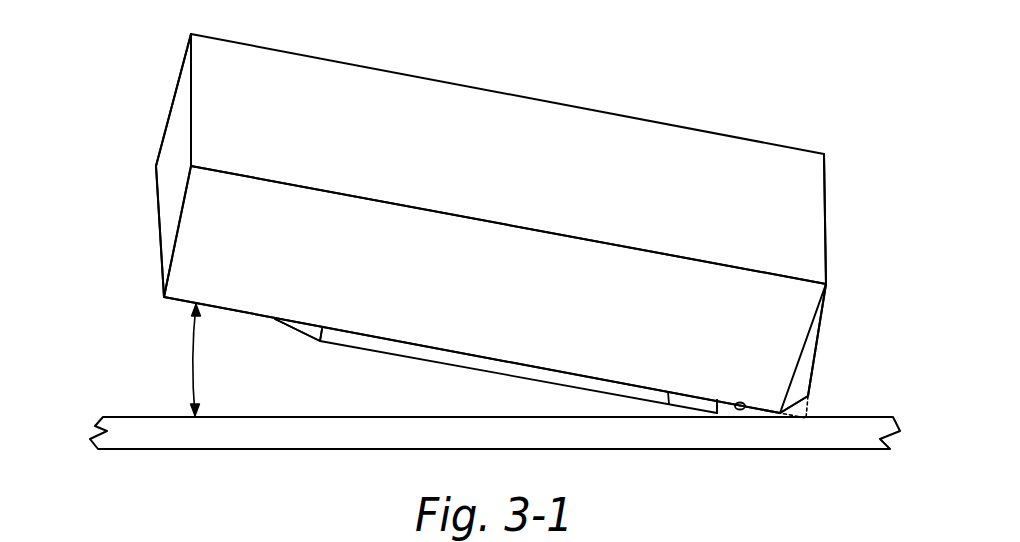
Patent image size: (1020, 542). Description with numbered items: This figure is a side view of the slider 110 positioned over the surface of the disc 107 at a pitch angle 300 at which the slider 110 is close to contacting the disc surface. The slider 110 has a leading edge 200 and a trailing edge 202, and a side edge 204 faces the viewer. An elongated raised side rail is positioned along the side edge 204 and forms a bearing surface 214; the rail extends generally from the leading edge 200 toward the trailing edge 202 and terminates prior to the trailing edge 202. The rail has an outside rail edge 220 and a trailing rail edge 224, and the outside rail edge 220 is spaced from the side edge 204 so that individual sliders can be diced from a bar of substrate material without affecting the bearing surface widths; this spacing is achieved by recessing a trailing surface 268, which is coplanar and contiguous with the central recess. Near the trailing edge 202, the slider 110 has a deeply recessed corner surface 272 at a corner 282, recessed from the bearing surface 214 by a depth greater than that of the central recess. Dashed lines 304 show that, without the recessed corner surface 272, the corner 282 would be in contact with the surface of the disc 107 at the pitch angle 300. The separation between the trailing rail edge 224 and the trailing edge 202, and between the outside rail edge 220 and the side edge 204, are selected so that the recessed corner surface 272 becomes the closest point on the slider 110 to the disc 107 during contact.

The slider 110 is at (552, 146).
The leading edge 200 is at (159, 181).
The trailing edge 202 is at (826, 240).
The side edge 204 is at (450, 271).
The bearing surface 214 is at (353, 336).
The outside rail edge 220 is at (500, 368).
The trailing rail edge 224 is at (703, 399).
The trailing surface 268 is at (733, 402).
The recessed corner surface 272 is at (788, 403).
The corner 282 is at (818, 337).
The dashed lines 304 is at (818, 408).
The pitch angle 300 is at (190, 363).
The disc 107 is at (325, 432).